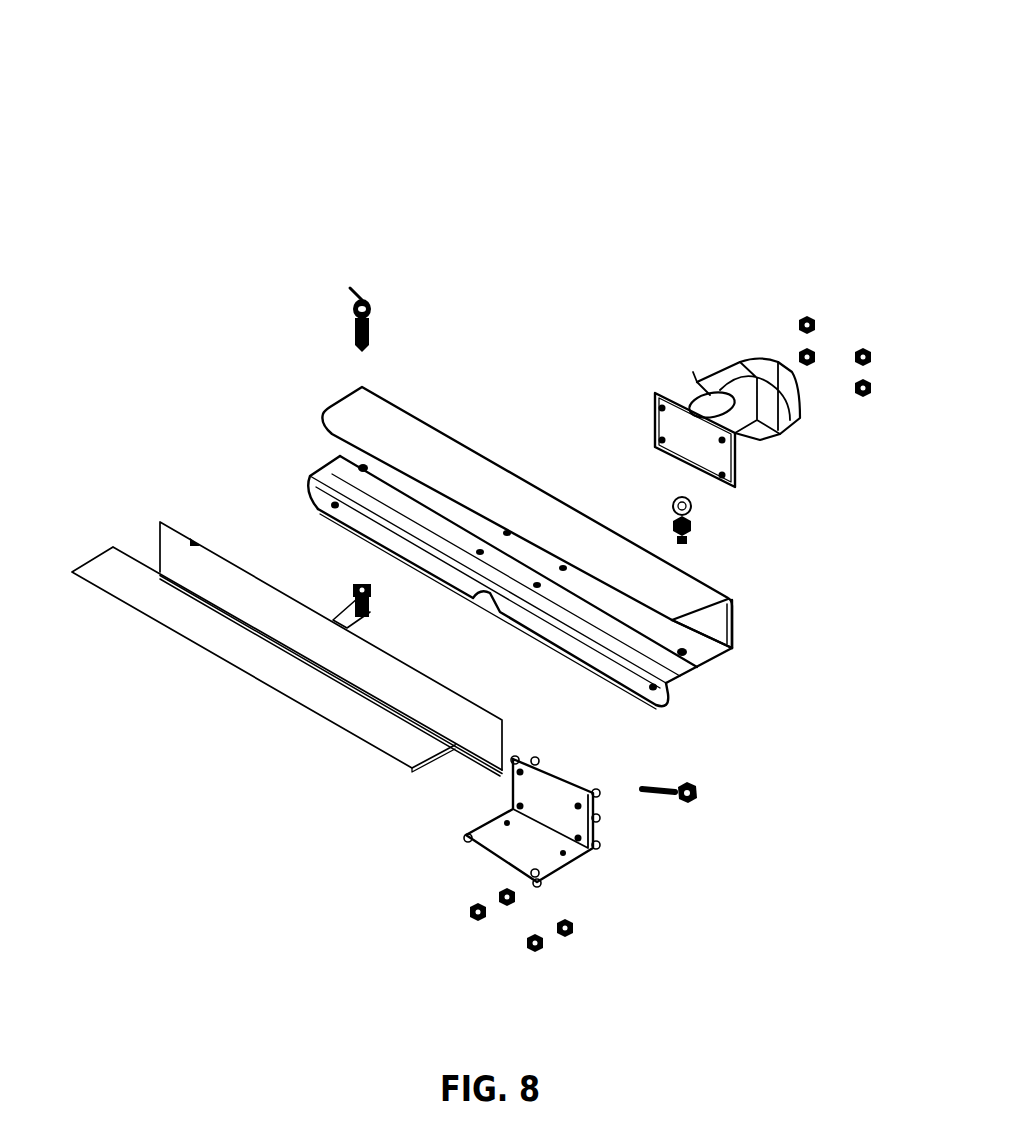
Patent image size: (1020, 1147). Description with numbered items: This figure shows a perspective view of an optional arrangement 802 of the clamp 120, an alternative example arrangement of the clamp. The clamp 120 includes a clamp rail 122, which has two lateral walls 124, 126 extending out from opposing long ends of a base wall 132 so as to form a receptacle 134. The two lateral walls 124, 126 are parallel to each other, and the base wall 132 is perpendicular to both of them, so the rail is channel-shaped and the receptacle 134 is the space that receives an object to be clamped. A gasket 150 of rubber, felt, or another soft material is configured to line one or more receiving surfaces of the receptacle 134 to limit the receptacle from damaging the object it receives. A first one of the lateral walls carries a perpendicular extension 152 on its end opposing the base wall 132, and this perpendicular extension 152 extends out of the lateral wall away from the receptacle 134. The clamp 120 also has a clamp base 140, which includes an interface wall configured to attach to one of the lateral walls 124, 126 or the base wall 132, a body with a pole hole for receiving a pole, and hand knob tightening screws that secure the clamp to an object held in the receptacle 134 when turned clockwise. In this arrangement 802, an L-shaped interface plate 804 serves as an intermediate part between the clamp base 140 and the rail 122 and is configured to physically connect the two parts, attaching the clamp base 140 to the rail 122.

The optional arrangement 802 is at (536, 41).
The clamp 120 is at (320, 118).
The clamp rail 122 is at (433, 376).
The lateral wall 124 is at (697, 670).
The lateral wall 126 is at (547, 522).
The base wall 132 is at (733, 620).
The receptacle 134 is at (724, 676).
The clamp base 140 is at (722, 277).
The gasket 150 is at (478, 752).
The perpendicular extension 152 is at (603, 665).
The L-shaped interface plate 804 is at (590, 848).